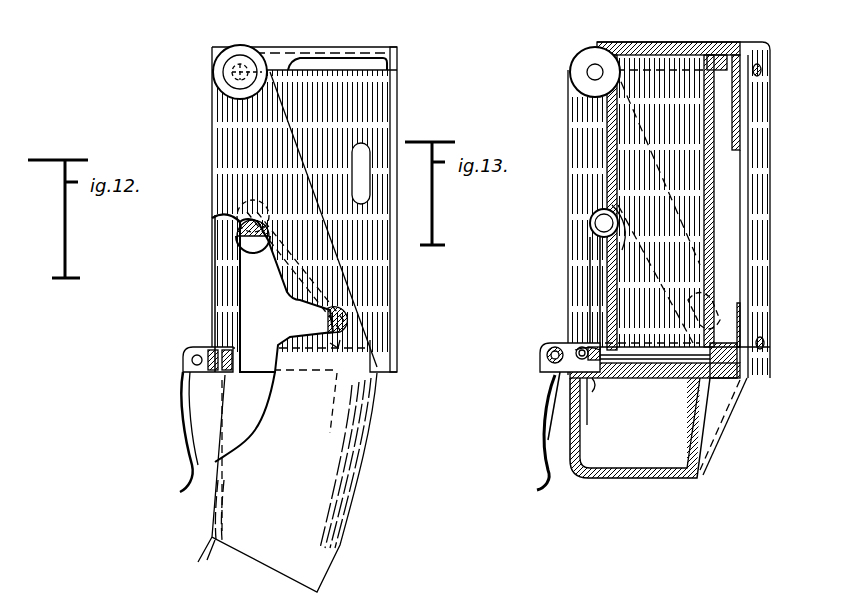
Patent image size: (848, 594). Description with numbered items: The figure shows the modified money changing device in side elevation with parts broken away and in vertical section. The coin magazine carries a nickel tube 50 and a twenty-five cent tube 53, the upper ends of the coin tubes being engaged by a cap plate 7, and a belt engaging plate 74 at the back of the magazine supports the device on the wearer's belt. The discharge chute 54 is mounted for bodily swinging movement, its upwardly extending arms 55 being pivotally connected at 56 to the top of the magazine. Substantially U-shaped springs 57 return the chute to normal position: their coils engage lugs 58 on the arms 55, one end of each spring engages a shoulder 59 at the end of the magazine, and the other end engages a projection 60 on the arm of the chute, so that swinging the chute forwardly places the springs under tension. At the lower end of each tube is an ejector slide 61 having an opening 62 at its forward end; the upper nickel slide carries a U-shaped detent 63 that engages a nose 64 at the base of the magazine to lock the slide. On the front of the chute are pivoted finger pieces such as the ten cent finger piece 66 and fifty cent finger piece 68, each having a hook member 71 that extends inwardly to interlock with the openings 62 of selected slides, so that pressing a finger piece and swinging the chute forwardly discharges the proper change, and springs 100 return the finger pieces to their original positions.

In FIG. 12, the cap plate 7 is at (345, 46).
In FIG. 13, the cap plate 7 is at (659, 184).
In FIG. 13, the nickel tube 50 is at (712, 92).
In FIG. 12, the twenty-five cent tube 53 is at (328, 102).
In FIG. 12, the discharge chute 54 is at (352, 480).
In FIG. 13, the discharge chute 54 is at (703, 425).
In FIG. 12, the upwardly extending arms 55 is at (222, 200).
In FIG. 13, the upwardly extending arms 55 is at (575, 258).
In FIG. 12, the pivotal connection 56 is at (238, 70).
In FIG. 13, the pivotal connection 56 is at (595, 72).
In FIG. 12, the springs 57 is at (232, 290).
In FIG. 13, the springs 57 is at (598, 286).
In FIG. 12, the lugs 58 is at (236, 242).
In FIG. 13, the lugs 58 is at (604, 222).
In FIG. 12, the shoulder 59 is at (215, 345).
In FIG. 12, the projection 60 is at (345, 320).
In FIG. 13, the projection 60 is at (715, 288).
In FIG. 13, the ejector slide 61 is at (676, 365).
In FIG. 13, the opening 62 is at (606, 372).
In FIG. 13, the U shaped bail or detent 63 is at (556, 345).
In FIG. 13, the nose or projection 64 is at (598, 348).
In FIG. 13, the ten cent finger piece 66 is at (542, 447).
In FIG. 12, the fifty cent finger piece 68 is at (200, 472).
In FIG. 13, the hook member 71 is at (592, 398).
In FIG. 12, the belt engaging plate 74 is at (400, 118).
In FIG. 13, the belt engaging plate 74 is at (755, 225).
In FIG. 13, the springs 100 is at (548, 402).